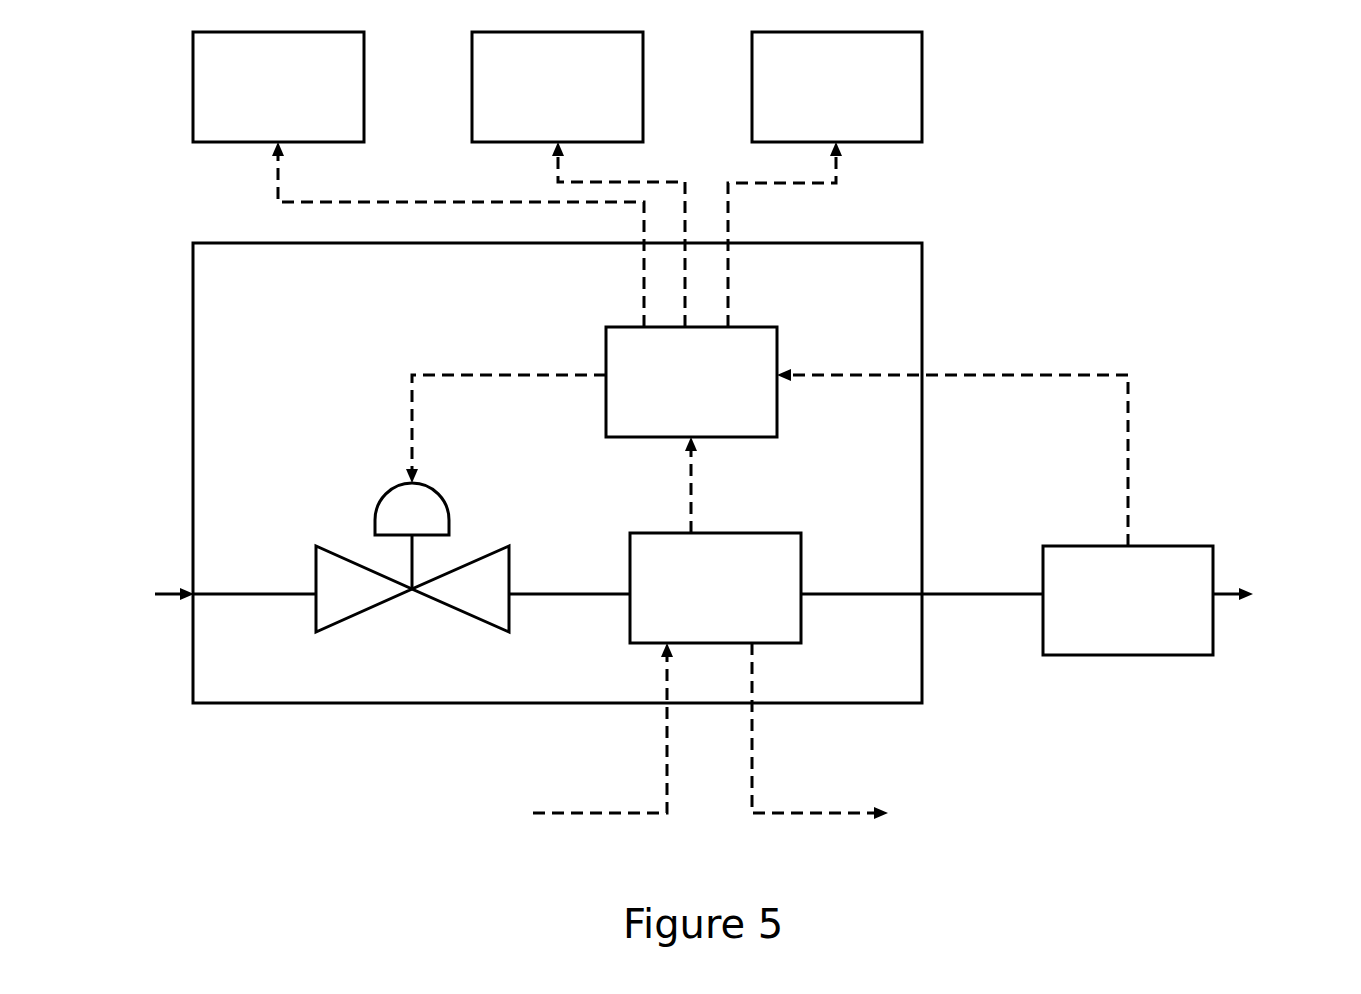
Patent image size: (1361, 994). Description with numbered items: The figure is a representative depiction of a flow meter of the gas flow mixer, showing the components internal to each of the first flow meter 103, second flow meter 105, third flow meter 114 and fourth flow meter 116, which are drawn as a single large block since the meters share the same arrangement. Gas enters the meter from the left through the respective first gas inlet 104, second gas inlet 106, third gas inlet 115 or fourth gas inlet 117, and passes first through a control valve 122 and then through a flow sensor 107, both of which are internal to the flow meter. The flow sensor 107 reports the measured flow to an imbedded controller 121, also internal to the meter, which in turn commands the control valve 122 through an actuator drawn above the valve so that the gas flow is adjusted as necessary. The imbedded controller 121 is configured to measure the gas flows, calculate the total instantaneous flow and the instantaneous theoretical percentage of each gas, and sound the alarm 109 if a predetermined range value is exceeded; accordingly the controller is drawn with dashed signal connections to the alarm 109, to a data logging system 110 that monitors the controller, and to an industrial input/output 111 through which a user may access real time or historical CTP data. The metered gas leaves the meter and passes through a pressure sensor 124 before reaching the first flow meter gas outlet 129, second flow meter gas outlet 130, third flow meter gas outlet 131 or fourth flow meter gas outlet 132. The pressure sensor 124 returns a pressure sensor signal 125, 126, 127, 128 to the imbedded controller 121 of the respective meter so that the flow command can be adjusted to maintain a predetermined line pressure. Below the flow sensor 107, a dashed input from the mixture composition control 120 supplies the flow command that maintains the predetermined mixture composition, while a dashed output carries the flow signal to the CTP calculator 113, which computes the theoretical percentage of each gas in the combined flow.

The first flow meter 103 is at (557, 473).
The second flow meter 105 is at (557, 473).
The third flow meter 114 is at (557, 473).
The fourth flow meter 116 is at (557, 473).
The first gas inlet 104 is at (545, 595).
The second gas inlet 106 is at (545, 595).
The third gas inlet 115 is at (545, 595).
The fourth gas inlet 117 is at (545, 595).
The flow sensor 107 is at (715, 588).
The alarm 109 is at (825, 179).
The data logging system 110 is at (578, 179).
The industrial input/output 111 is at (418, 179).
The CTP calculator 113 is at (850, 733).
The mixture composition control 120 is at (574, 733).
The imbedded controller 121 is at (591, 430).
The control valve 122 is at (412, 565).
The pressure sensor 124 is at (1128, 600).
The pressure sensor signal to first flow meter 125 is at (952, 427).
The pressure sensor signal to second flow meter 126 is at (952, 427).
The pressure sensor signal to third flow meter 127 is at (952, 427).
The pressure sensor signal to fourth flow meter 128 is at (952, 427).
The first flow meter gas outlet 129 is at (1283, 591).
The second flow meter gas outlet 130 is at (1283, 591).
The third flow meter gas outlet 131 is at (1283, 591).
The fourth flow meter gas outlet 132 is at (1283, 591).